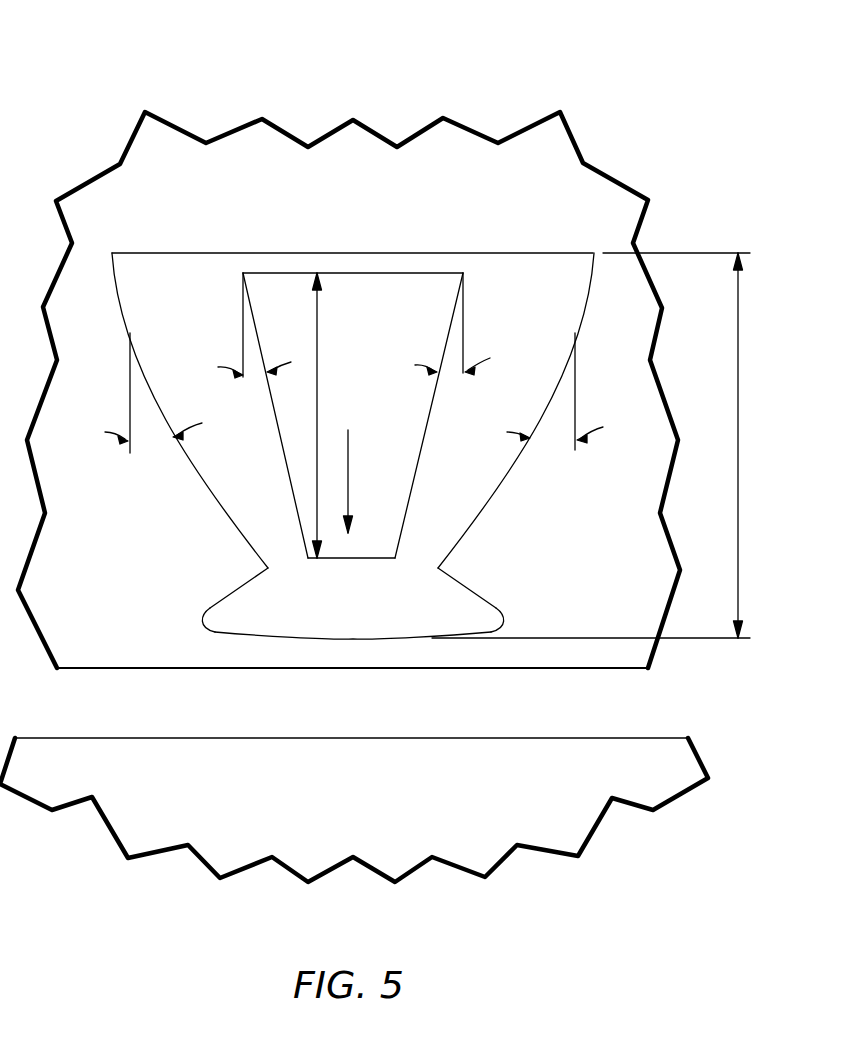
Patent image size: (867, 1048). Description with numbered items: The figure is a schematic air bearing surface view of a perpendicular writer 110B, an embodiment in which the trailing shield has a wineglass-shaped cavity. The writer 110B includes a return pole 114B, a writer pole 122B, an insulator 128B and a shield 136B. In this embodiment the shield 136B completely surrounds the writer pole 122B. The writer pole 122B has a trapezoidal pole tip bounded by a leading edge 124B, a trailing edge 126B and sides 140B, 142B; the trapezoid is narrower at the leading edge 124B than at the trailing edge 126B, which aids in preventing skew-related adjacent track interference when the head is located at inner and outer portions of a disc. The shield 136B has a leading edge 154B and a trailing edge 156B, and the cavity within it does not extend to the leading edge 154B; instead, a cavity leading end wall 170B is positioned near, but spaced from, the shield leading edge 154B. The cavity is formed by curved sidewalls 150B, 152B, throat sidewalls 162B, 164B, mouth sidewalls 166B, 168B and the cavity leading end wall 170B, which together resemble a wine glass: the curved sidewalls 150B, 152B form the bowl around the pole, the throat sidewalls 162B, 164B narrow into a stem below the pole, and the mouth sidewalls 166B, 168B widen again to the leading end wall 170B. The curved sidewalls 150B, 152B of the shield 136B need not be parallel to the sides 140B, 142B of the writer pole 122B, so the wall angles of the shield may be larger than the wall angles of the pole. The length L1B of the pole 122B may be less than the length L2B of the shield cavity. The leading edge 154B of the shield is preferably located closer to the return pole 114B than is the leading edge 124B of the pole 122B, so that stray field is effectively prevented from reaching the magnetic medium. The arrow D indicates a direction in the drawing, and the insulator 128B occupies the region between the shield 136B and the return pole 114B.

The perpendicular writer 110B is at (100, 142).
The return pole 114B is at (366, 798).
The writer pole 122B is at (368, 403).
The leading edge 124B is at (333, 560).
The trailing edge 126B is at (343, 272).
The insulator 128B is at (552, 301).
The shield 136B is at (578, 193).
The side 140B is at (290, 488).
The side 142B is at (415, 482).
The curved sidewall 150B is at (125, 316).
The curved sidewall 152B is at (630, 306).
The leading edge 154B is at (528, 669).
The trailing edge 156B is at (290, 252).
The throat sidewall 162B is at (266, 566).
The throat sidewall 164B is at (441, 567).
The mouth sidewall 166B is at (226, 595).
The mouth sidewall 168B is at (469, 592).
The cavity leading end wall 170B is at (377, 637).
The length of pole L1B is at (318, 365).
The length of shield cavity L2B is at (733, 387).
The direction of welding D is at (360, 481).